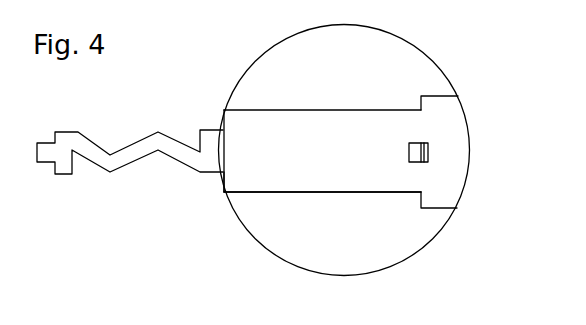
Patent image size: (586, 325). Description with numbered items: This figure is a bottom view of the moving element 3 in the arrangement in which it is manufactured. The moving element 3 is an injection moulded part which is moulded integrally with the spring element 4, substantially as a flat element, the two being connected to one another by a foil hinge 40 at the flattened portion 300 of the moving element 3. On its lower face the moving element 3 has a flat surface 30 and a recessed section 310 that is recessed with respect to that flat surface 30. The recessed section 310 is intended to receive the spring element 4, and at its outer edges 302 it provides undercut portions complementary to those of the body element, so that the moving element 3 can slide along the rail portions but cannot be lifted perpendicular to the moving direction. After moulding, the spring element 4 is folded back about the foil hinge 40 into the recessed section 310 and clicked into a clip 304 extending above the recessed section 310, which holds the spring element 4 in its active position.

The moving element 3 is at (378, 65).
The flat surface 30 is at (419, 86).
The flattened portion 300 is at (218, 119).
The outer edges 302 is at (329, 193).
The clip 304 is at (428, 152).
The recessed section 310 is at (379, 173).
The spring element 4 is at (92, 158).
The foil hinge 40 is at (222, 178).